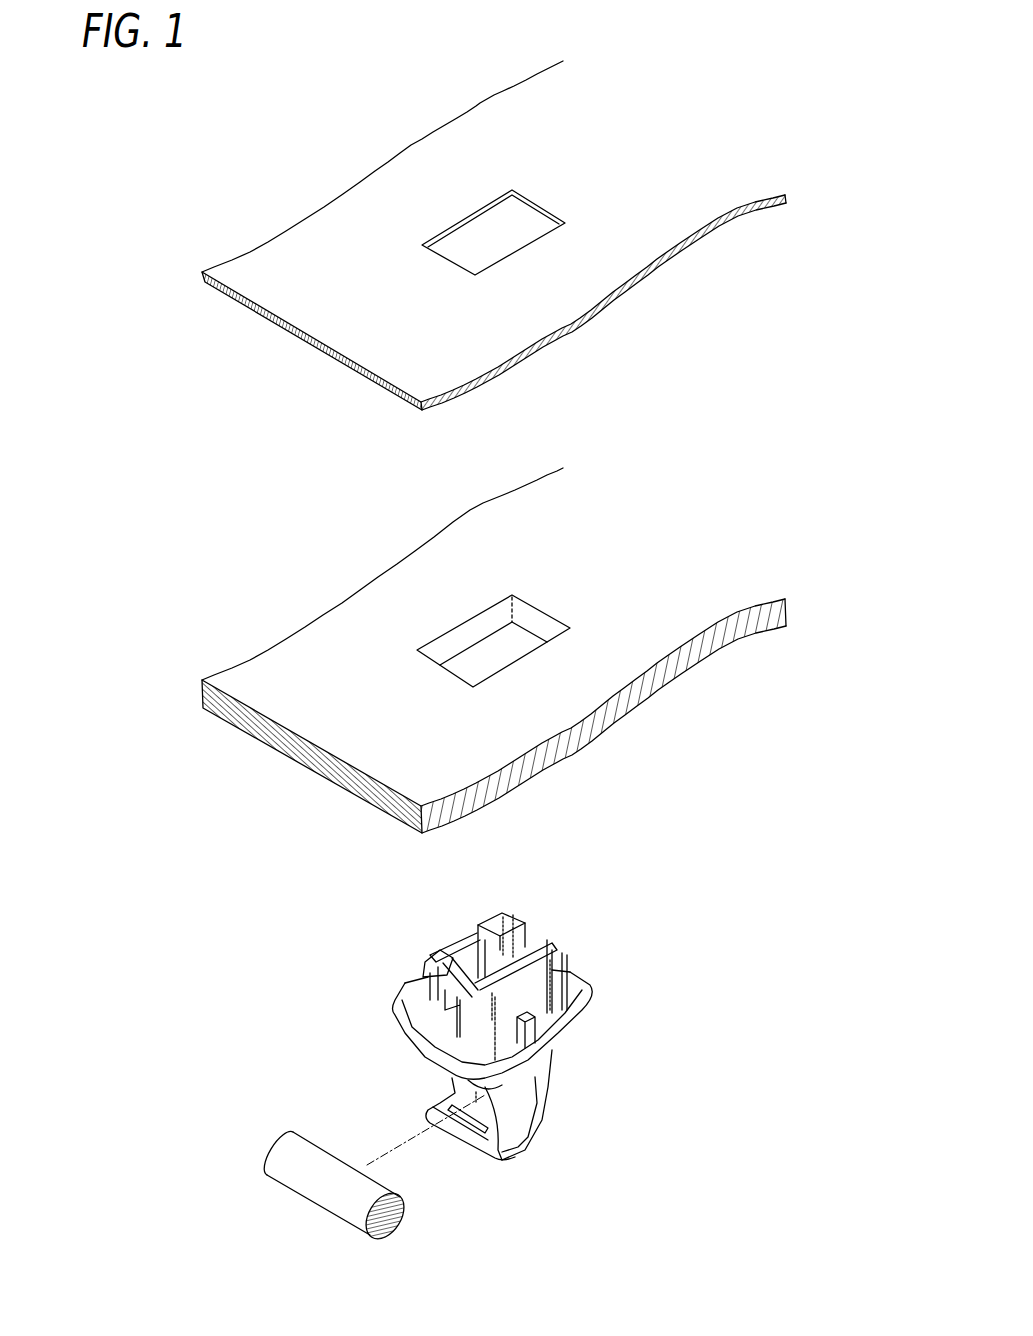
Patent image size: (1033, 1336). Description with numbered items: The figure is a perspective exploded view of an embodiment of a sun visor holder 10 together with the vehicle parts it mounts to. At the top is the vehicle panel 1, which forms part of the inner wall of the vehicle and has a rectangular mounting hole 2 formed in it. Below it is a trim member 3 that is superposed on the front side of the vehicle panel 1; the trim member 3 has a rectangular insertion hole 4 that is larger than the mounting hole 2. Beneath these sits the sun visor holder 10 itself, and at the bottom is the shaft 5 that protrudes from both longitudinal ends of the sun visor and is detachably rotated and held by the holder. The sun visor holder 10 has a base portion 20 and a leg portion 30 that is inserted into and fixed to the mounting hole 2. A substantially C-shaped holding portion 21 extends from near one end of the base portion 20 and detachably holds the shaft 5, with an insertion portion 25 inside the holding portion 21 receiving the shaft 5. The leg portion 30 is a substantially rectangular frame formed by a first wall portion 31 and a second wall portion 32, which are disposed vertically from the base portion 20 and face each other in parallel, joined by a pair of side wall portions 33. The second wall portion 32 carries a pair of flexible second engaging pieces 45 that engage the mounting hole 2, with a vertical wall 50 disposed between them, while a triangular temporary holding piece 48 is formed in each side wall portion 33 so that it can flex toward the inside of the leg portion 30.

The vehicle panel 1 is at (627, 260).
The mounting hole 2 is at (472, 240).
The trim member 3 is at (610, 668).
The insertion hole 4 is at (473, 658).
The shaft 5 is at (325, 1195).
The sun visor holder 10 is at (425, 945).
The base portion 20 is at (600, 1008).
The holding portion 21 is at (503, 1155).
The insertion portion 25 is at (518, 1115).
The leg portion 30 is at (526, 949).
The first wall portion 31 is at (513, 918).
The second wall portion 32 is at (470, 965).
The side wall portion 33 is at (490, 935).
The second engaging piece 45 is at (427, 975).
The temporary holding piece 48 is at (530, 992).
The vertical wall 50 is at (462, 970).